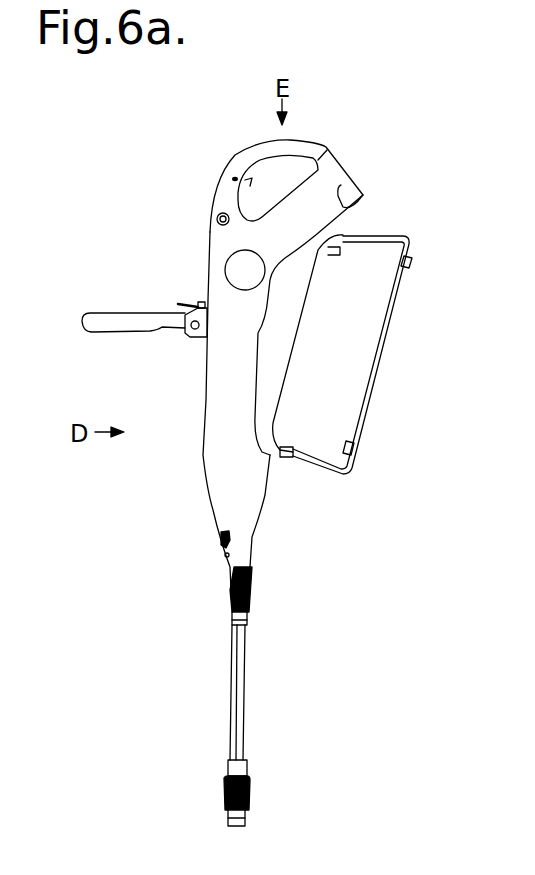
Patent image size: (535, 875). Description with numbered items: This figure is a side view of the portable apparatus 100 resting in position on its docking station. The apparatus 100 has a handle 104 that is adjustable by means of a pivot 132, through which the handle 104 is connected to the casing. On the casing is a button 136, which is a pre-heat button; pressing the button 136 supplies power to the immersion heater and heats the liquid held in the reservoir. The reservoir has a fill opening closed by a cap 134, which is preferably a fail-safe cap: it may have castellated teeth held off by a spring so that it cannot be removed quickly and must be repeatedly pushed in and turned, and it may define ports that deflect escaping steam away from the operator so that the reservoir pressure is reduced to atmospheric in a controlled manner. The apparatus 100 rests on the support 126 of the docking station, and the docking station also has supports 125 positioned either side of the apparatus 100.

The portable apparatus 100 is at (266, 522).
The handle 104 is at (105, 322).
The supports 125 is at (395, 312).
The support 126 is at (283, 323).
The pivot 132 is at (197, 338).
The cap 134 is at (236, 272).
The button 136 is at (217, 219).